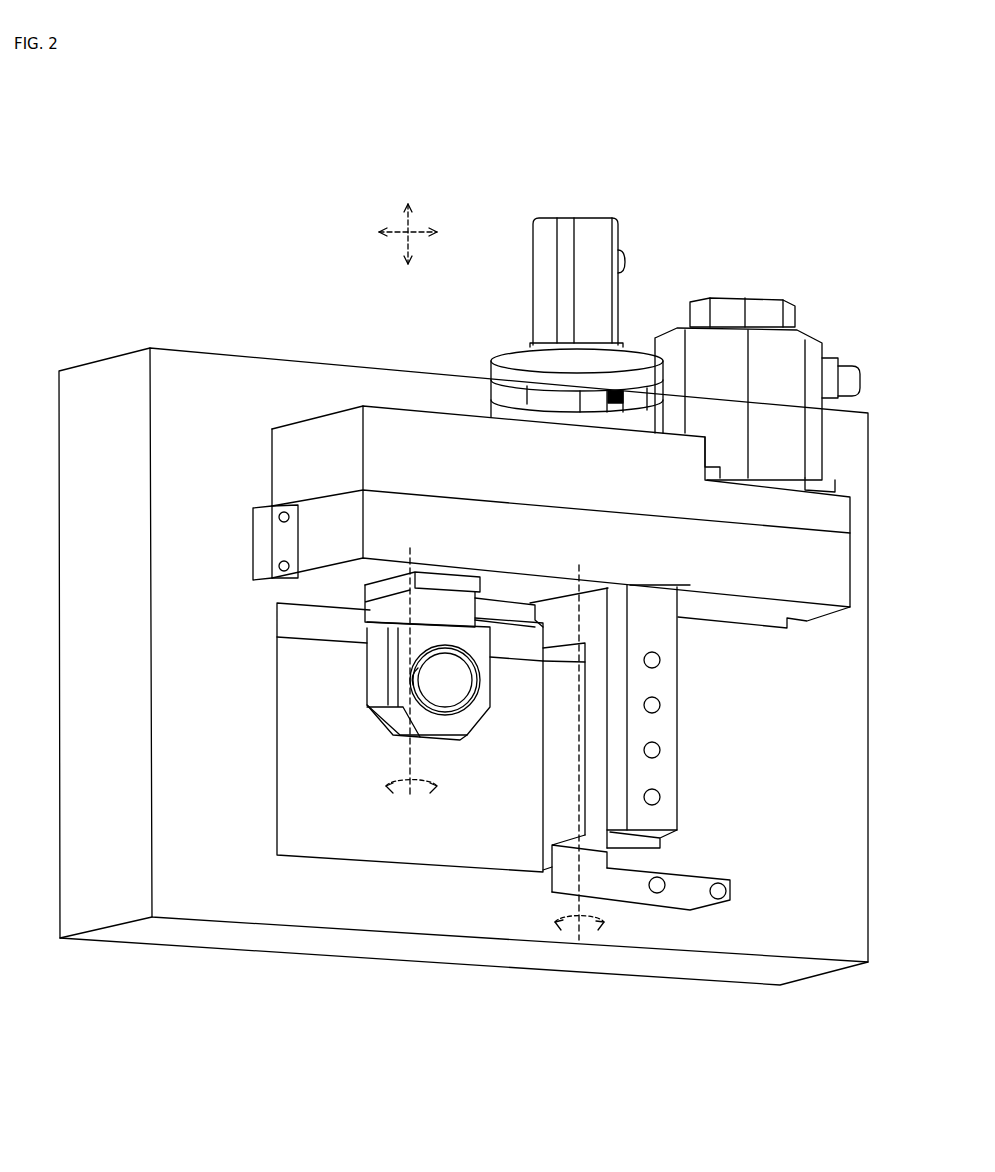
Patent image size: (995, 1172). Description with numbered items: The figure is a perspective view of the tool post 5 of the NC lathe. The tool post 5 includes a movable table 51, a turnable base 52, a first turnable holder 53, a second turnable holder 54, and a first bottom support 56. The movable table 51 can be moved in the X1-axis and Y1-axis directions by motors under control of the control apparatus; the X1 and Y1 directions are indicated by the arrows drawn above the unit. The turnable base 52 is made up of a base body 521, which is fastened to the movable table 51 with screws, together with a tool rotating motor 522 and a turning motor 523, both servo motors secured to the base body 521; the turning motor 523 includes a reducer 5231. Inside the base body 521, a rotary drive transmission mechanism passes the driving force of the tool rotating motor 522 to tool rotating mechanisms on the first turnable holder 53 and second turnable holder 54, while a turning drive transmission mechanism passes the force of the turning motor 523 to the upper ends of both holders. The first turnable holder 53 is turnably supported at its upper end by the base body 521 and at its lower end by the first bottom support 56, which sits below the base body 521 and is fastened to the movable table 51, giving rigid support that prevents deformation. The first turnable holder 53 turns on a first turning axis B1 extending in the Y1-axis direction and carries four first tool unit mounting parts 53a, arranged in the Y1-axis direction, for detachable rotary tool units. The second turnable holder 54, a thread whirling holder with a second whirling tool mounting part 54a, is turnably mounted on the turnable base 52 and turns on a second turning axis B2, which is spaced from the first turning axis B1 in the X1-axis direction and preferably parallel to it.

The tool post 5 is at (203, 306).
The movable table 51 is at (271, 361).
The turnable base 52 is at (818, 318).
The base body 521 is at (408, 410).
The tool rotating motor 522 is at (763, 303).
The turning motor 523 is at (596, 216).
The reducer 5231 is at (507, 353).
The first turnable holder 53 is at (562, 840).
The first tool unit mounting part 53a is at (717, 798).
The second turnable holder 54 is at (365, 648).
The second whirling tool mounting part 54a is at (423, 672).
The first bottom support 56 is at (672, 905).
The first turning axis B1 is at (572, 752).
The second turning axis B2 is at (405, 752).
The X1-axis X1 is at (393, 232).
The Y1-axis Y1 is at (407, 224).